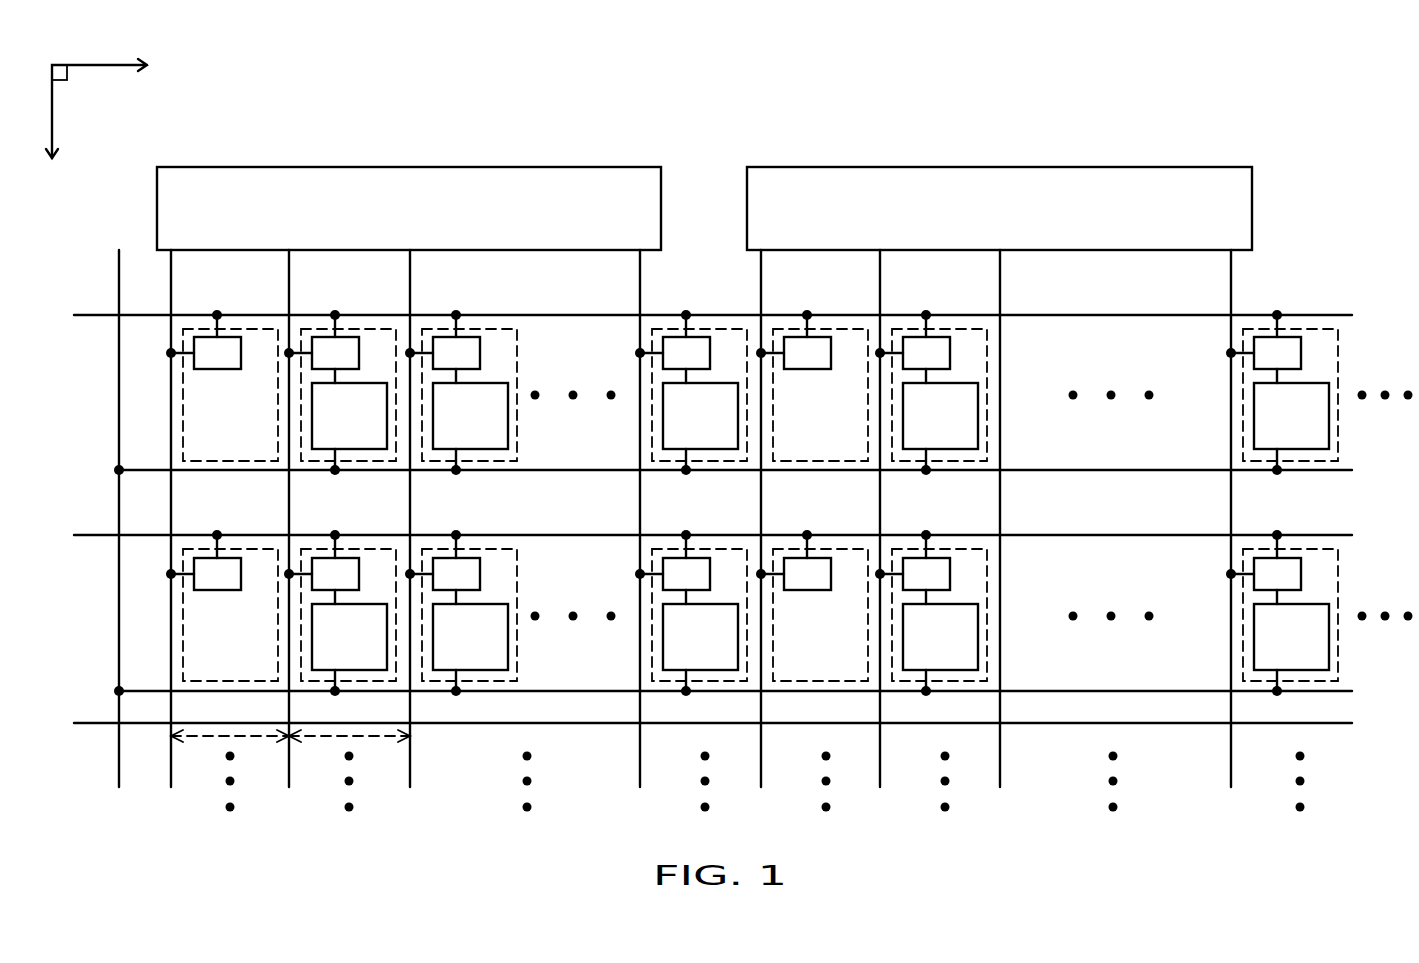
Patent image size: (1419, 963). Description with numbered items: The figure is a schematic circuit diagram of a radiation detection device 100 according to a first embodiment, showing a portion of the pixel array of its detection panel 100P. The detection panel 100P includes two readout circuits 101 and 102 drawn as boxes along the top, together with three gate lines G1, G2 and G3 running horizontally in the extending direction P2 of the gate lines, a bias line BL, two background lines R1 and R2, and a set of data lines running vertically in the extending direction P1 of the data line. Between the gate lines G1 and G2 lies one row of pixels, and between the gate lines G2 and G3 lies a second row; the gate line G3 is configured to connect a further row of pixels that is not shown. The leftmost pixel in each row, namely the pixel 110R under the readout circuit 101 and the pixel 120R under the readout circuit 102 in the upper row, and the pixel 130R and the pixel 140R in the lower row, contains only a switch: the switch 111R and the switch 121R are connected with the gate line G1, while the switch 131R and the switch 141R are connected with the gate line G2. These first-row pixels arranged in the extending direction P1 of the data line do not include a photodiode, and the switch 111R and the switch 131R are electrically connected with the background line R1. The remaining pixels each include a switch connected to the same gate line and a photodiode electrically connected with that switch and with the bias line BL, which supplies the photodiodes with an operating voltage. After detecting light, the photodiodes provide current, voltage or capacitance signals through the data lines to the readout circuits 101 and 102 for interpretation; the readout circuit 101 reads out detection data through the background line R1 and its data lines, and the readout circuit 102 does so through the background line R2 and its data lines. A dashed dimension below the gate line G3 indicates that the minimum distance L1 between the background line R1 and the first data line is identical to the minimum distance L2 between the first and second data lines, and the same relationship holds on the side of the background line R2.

The radiation detection device 100 is at (1342, 845).
The detection panel 100P is at (1371, 289).
The readout circuit 101 is at (661, 209).
The readout circuit 102 is at (1252, 209).
The pixel 110R is at (222, 364).
The switch 111R is at (217, 369).
The pixel 120R is at (812, 364).
The switch 121R is at (807, 369).
The pixel 130R is at (222, 584).
The switch 131R is at (217, 590).
The pixel 140R is at (812, 584).
The switch 141R is at (807, 590).
The bias line BL is at (120, 272).
The gate line G1 is at (697, 315).
The gate line G2 is at (697, 535).
The gate line G3 is at (697, 723).
The background line R1 is at (171, 535).
The background line R2 is at (763, 535).
The minimum distance L1 is at (215, 738).
The minimum distance L2 is at (318, 738).
The extending direction of the data line P1 is at (52, 171).
The extending direction of the gate lines P2 is at (116, 104).